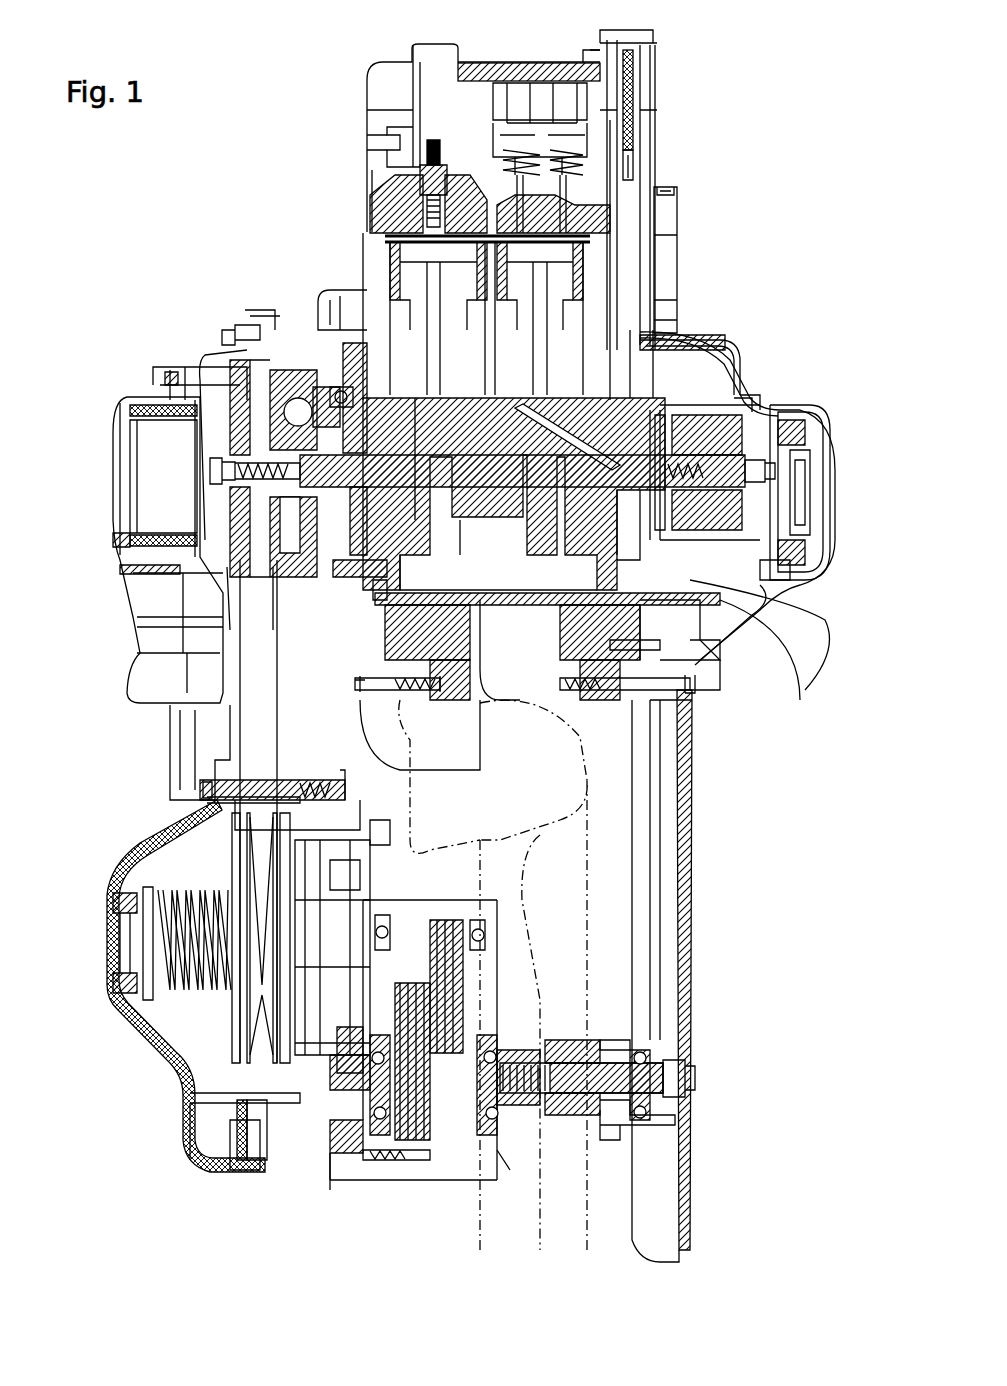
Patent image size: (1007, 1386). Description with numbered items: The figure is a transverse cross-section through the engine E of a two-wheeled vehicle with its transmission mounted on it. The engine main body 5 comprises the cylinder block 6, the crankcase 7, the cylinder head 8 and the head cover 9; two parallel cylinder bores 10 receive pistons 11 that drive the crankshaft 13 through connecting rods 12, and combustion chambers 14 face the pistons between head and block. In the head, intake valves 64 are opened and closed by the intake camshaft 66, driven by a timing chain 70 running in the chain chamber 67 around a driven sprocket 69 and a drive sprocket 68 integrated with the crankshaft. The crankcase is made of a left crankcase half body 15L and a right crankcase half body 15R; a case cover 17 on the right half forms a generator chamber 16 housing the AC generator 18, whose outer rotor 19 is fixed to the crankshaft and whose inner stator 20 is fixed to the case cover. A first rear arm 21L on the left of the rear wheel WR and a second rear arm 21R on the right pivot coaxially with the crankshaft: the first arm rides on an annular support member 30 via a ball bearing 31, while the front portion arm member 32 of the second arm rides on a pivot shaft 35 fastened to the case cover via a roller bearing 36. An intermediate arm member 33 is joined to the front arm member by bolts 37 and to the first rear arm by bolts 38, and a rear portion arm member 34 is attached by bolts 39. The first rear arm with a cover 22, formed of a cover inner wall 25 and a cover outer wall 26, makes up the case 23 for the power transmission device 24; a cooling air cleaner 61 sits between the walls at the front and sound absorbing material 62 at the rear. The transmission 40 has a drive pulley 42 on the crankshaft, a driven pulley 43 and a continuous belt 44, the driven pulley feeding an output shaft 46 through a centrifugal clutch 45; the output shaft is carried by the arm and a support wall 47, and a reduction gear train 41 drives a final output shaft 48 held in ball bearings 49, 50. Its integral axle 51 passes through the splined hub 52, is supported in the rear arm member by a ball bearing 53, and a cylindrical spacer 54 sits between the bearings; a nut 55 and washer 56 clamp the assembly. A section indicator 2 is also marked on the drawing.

The engine main body 5 is at (350, 110).
The cylinder block 6 is at (657, 303).
The crankcase 7 is at (548, 620).
The cylinder head 8 is at (365, 128).
The head cover 9 is at (653, 67).
The cylinder bore 10 is at (365, 262).
The piston 11 is at (410, 220).
The connecting rod 12 is at (408, 320).
The crankshaft 13 is at (514, 460).
The combustion chamber 14 is at (410, 222).
The left crankcase half body 15L is at (372, 688).
The right crankcase half body 15R is at (700, 660).
The generator chamber 16 is at (790, 630).
The case cover 17 is at (812, 585).
The AC generator 18 is at (817, 290).
The outer rotor 19 is at (750, 390).
The inner stator 20 is at (757, 403).
The first rear arm 21L is at (375, 1183).
The second rear arm 21R is at (695, 830).
The cover 22 is at (270, 1182).
The case 23 is at (405, 1265).
The power transmission device 24 is at (360, 875).
The cover inner wall 25 is at (195, 628).
The cover outer wall 26 is at (165, 708).
The support member 30 is at (437, 493).
The ball bearing 31 is at (258, 811).
The front portion arm member 32 is at (800, 515).
The intermediate arm member 33 is at (485, 668).
The rear portion arm member 34 is at (693, 958).
The pivot shaft 35 is at (803, 432).
The roller bearing 36 is at (807, 547).
The bolts 37 is at (700, 625).
The bolts 38 is at (395, 705).
The bolts 39 is at (705, 695).
The transmission 40 is at (220, 1017).
The reduction gear train 41 is at (438, 1117).
The drive pulley 42 is at (245, 398).
The driven pulley 43 is at (240, 892).
The continuous belt 44 is at (227, 1177).
The centrifugal clutch 45 is at (390, 840).
The output shaft 46 is at (473, 933).
The support wall 47 is at (347, 1043).
The final output shaft 48 is at (370, 1085).
The ball bearing 49 is at (545, 1113).
The ball bearing 50 is at (377, 1083).
The axle 51 is at (597, 1093).
The hub 52 is at (545, 1130).
The ball bearing 53 is at (647, 1117).
The cylindrical spacer 54 is at (590, 1053).
The nut 55 is at (655, 1105).
The washer 56 is at (692, 1065).
The cooling air cleaner 61 is at (150, 410).
The sound absorbing material 62 is at (143, 848).
The intake valve 64 is at (680, 220).
The intake camshaft 66 is at (578, 97).
The chain chamber 67 is at (643, 173).
The drive sprocket 68 is at (637, 535).
The driven sprocket 69 is at (660, 80).
The timing chain 70 is at (633, 173).
The engine E is at (690, 233).
The rear wheel WR is at (590, 887).
The section line 2 is at (393, 945).